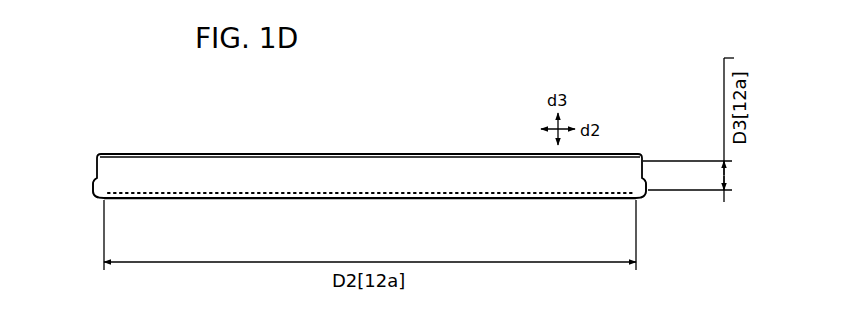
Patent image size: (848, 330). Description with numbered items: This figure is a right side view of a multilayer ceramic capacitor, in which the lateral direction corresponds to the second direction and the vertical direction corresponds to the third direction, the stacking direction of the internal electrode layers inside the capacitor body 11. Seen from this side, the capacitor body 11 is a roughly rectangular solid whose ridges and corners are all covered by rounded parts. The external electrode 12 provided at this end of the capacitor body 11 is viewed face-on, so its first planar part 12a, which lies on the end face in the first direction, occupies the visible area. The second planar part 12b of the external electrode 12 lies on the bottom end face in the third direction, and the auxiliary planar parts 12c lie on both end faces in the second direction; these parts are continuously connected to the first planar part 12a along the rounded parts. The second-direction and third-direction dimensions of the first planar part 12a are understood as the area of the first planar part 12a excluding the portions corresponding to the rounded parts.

The capacitor body 11 is at (369, 164).
The external electrode 12 is at (367, 200).
The first planar part 12a is at (253, 178).
The second planar part 12b is at (487, 200).
The auxiliary planar part 12c is at (95, 183).